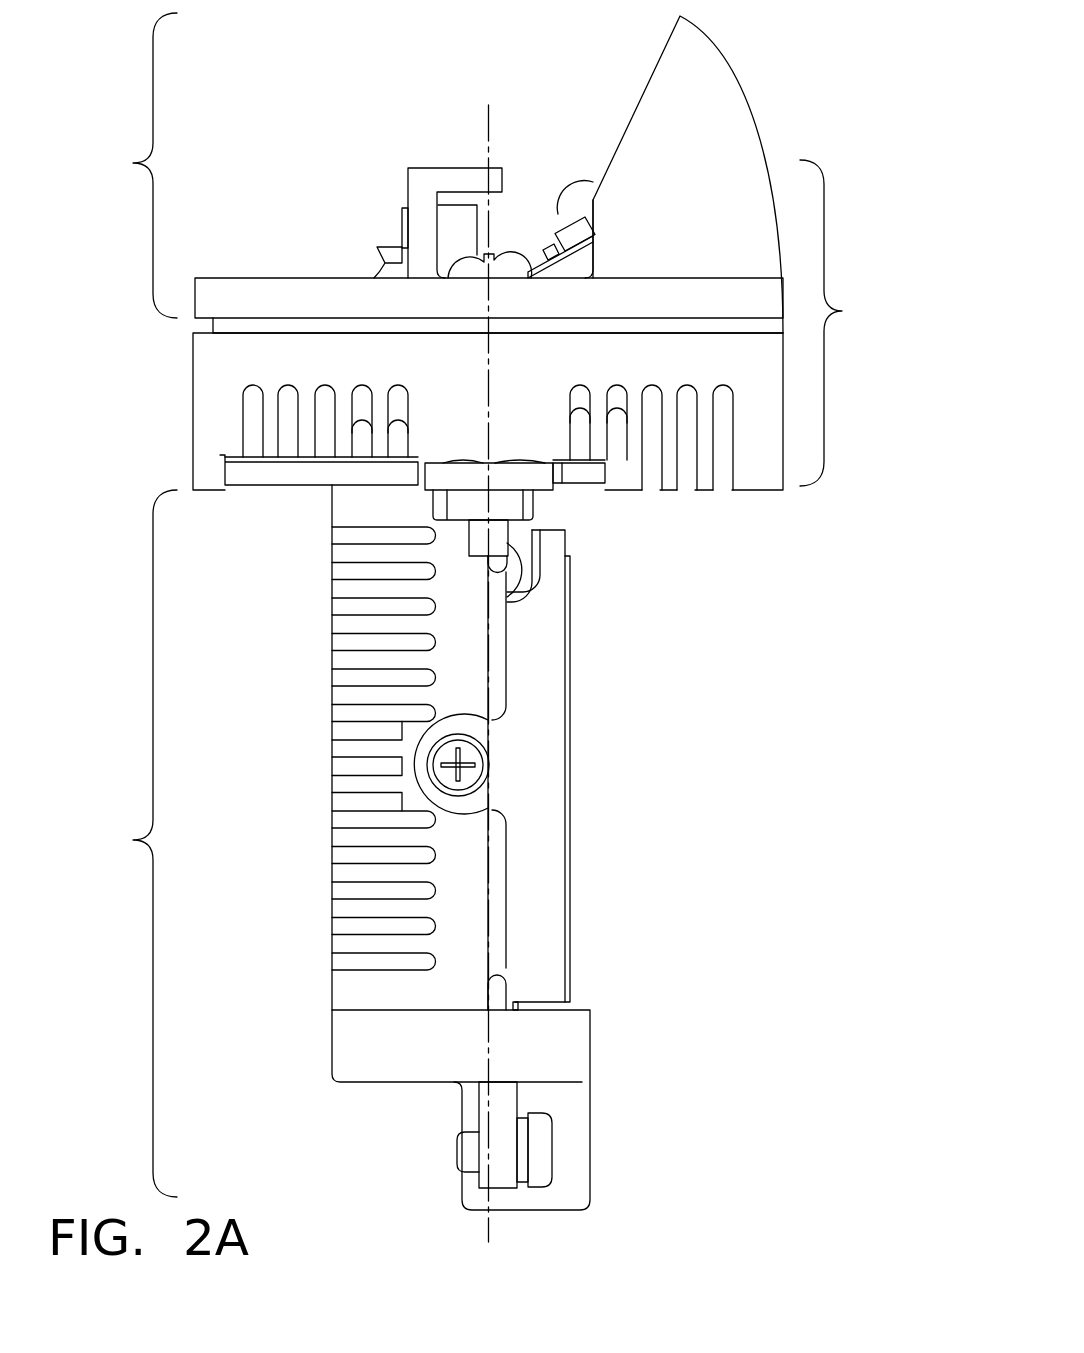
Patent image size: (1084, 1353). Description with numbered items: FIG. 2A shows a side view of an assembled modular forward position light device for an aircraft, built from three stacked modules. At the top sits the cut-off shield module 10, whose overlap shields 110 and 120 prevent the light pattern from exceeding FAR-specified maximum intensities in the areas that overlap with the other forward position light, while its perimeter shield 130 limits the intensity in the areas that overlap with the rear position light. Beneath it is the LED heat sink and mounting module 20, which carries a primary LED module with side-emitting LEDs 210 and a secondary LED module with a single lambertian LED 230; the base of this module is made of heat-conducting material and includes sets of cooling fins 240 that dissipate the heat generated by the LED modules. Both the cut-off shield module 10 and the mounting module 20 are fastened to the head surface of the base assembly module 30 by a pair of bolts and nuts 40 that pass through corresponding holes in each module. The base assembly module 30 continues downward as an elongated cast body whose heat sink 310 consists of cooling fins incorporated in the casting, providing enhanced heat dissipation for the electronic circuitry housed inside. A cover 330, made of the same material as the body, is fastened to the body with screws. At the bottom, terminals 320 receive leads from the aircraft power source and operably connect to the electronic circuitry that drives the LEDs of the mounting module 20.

The cut-off shield module 10 is at (133, 163).
The LED heat sink and mounting module 20 is at (842, 311).
The base assembly module 30 is at (132, 840).
The bolts and nuts 40 is at (495, 256).
The overlap shield 110 is at (752, 103).
The overlap shield 120 is at (462, 167).
The perimeter shield 130 is at (278, 296).
The side-emitting LED 210 is at (395, 247).
The lambertian LED 230 is at (587, 186).
The cooling fins 240 is at (667, 490).
The heat sink 310 is at (318, 763).
The terminals 320 is at (502, 1173).
The cover 330 is at (548, 928).